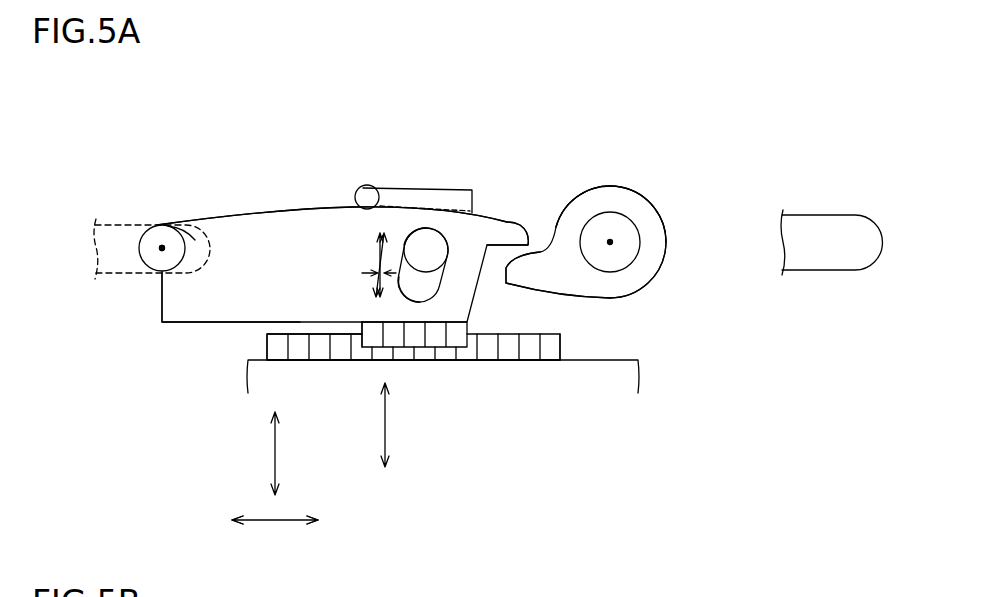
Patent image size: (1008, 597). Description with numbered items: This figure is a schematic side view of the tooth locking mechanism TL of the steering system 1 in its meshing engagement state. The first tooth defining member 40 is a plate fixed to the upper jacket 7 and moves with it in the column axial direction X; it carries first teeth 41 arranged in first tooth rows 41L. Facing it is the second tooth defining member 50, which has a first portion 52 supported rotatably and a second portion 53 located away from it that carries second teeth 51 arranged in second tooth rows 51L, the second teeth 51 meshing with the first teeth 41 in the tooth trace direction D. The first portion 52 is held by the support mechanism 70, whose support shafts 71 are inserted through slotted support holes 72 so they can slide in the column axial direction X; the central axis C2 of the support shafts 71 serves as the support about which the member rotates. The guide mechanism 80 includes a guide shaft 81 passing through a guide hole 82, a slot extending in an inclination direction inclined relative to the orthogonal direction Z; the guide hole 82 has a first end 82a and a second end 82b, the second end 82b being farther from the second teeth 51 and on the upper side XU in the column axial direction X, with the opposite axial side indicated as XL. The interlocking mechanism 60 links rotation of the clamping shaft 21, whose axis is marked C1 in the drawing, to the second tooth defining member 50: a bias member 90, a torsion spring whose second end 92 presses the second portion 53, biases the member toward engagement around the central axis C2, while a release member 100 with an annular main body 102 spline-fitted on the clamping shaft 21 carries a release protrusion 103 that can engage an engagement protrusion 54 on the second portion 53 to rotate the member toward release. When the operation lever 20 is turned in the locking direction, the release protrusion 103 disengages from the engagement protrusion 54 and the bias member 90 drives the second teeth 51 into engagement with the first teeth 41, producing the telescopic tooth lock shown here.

The steering system 1 is at (571, 127).
The upper jacket 7 is at (618, 357).
The operation lever 20 is at (820, 228).
The clamping shaft 21 is at (640, 243).
The first tooth defining member 40 is at (259, 351).
The first teeth 41 is at (507, 360).
The first tooth rows 41L is at (563, 352).
The second tooth defining member 50 is at (289, 203).
The second teeth 51 is at (433, 347).
The second tooth rows 51L is at (359, 352).
The first portion 52 is at (177, 315).
The second portion 53 is at (462, 297).
The engagement protrusion 54 is at (507, 222).
The interlocking mechanism 60 is at (627, 233).
The support mechanism 70 is at (152, 195).
The support shafts 71 is at (193, 225).
The support holes 72 is at (208, 154).
The guide mechanism 80 is at (461, 197).
The guide shaft 81 is at (430, 240).
The guide hole 82 is at (479, 245).
The first end 82a is at (410, 292).
The second end 82b is at (410, 233).
The bias member 90 is at (412, 178).
The second end 92 is at (365, 186).
The release member 100 is at (670, 212).
The main body 102 is at (658, 233).
The release protrusion 103 is at (521, 279).
The cam center C1 is at (612, 245).
The central axis C2 is at (160, 252).
The tooth locking mechanism TL is at (604, 160).
The tooth trace direction D is at (390, 425).
The orthogonal direction Z is at (280, 451).
The column axial direction X is at (275, 523).
The X lower direction XL is at (217, 522).
The upper side XU is at (333, 522).